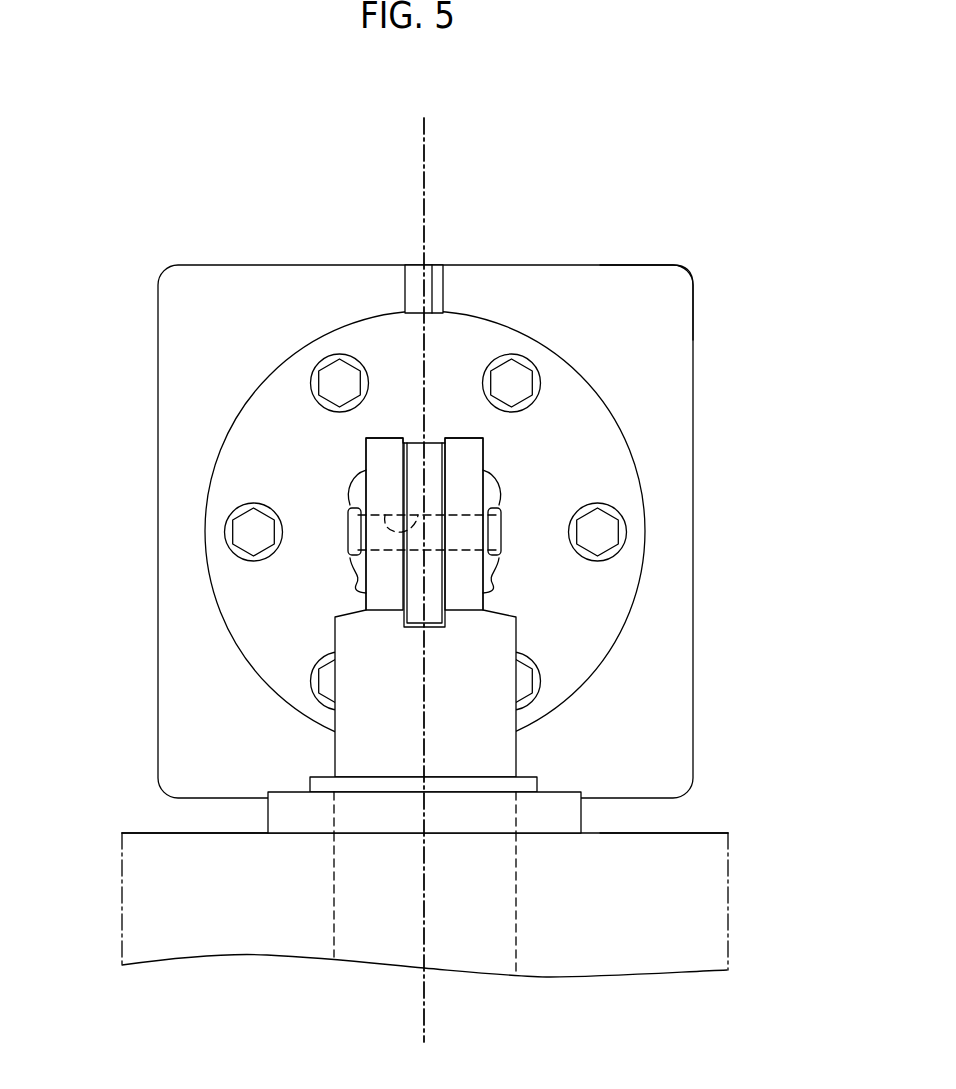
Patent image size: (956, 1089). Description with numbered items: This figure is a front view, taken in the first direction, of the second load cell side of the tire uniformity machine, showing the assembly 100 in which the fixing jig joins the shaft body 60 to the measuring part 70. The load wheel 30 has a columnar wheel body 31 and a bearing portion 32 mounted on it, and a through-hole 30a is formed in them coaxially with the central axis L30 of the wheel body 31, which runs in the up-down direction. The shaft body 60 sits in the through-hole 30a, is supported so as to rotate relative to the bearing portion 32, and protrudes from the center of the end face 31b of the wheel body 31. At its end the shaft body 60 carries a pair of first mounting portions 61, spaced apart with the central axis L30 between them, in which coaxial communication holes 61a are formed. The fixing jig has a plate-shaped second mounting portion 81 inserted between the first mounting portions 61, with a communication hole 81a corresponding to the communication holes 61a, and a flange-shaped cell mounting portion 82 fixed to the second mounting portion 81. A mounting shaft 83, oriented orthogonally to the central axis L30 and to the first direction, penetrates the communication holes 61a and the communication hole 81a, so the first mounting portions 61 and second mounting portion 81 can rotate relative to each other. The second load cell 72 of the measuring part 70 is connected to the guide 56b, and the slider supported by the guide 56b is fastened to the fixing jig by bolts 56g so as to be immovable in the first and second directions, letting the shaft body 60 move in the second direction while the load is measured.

The robot hand / end effector assembly 100 is at (463, 547).
The measuring part 70 is at (672, 323).
The second load cell 72 is at (644, 277).
The cell mounting portion 82 is at (253, 438).
The bolts 56g is at (522, 368).
The guide 56b is at (491, 215).
The shaft body 60 is at (473, 682).
The first mounting portions 61 is at (376, 447).
The communication holes 61a is at (368, 530).
The second mounting portion 81 is at (432, 443).
The communication hole 81a is at (385, 515).
The mounting shaft 83 is at (448, 527).
The bearing portion 32 is at (289, 790).
The wheel body 31 is at (693, 843).
The end face 31b is at (153, 831).
The load wheel 30 is at (426, 853).
The through-hole 30a is at (334, 932).
The central axis L30 is at (505, 547).